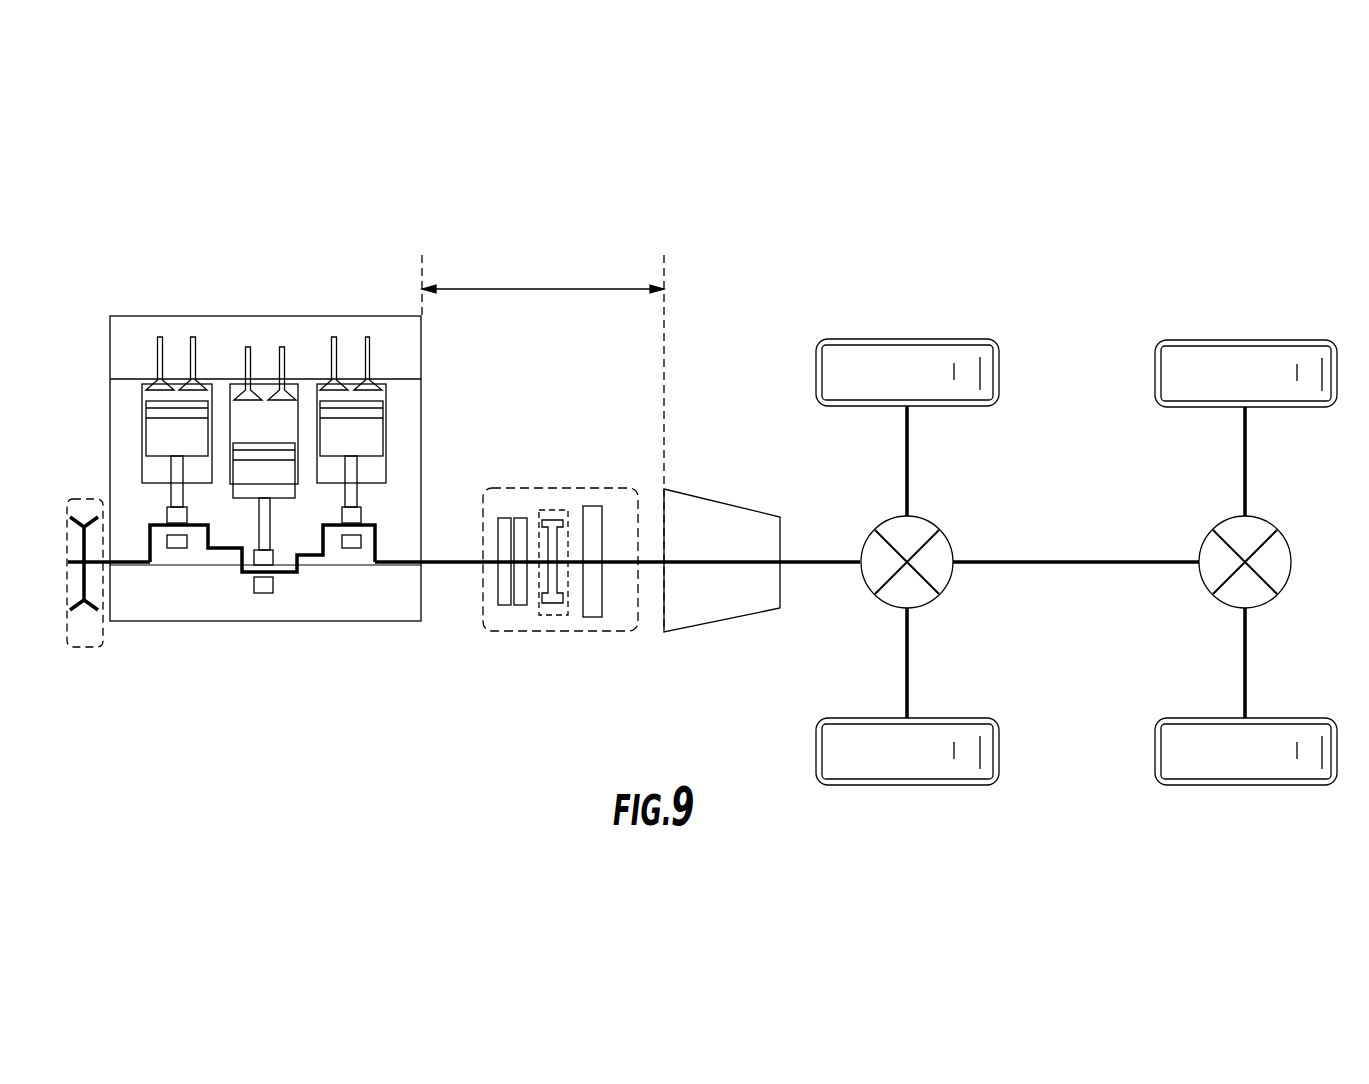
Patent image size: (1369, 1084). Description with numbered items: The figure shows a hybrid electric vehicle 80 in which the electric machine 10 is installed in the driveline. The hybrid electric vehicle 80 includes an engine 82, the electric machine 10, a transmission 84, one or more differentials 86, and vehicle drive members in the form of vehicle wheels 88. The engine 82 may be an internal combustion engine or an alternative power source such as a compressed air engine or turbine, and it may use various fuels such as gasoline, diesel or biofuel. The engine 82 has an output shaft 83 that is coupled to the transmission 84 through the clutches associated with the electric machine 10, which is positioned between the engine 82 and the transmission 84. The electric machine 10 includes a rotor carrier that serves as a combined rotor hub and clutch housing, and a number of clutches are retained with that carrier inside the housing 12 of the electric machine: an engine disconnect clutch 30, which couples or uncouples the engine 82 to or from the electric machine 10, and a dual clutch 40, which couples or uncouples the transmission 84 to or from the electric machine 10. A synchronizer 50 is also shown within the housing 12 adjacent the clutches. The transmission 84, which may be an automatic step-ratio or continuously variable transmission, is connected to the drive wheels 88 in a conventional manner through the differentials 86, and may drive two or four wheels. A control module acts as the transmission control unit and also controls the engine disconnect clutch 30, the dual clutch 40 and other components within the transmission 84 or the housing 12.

The hybrid electric vehicle 80 is at (702, 499).
The engine 82 is at (277, 316).
The output shaft 83 is at (443, 560).
The transmission 84 is at (723, 503).
The differential 86 is at (922, 605).
The vehicle wheels 88 is at (1280, 340).
The electric machine 10 is at (534, 575).
The housing 12 is at (551, 575).
The engine disconnect clutch 30 is at (520, 605).
The dual clutch 40 is at (592, 610).
The synchronizer sleeve 50 is at (560, 613).